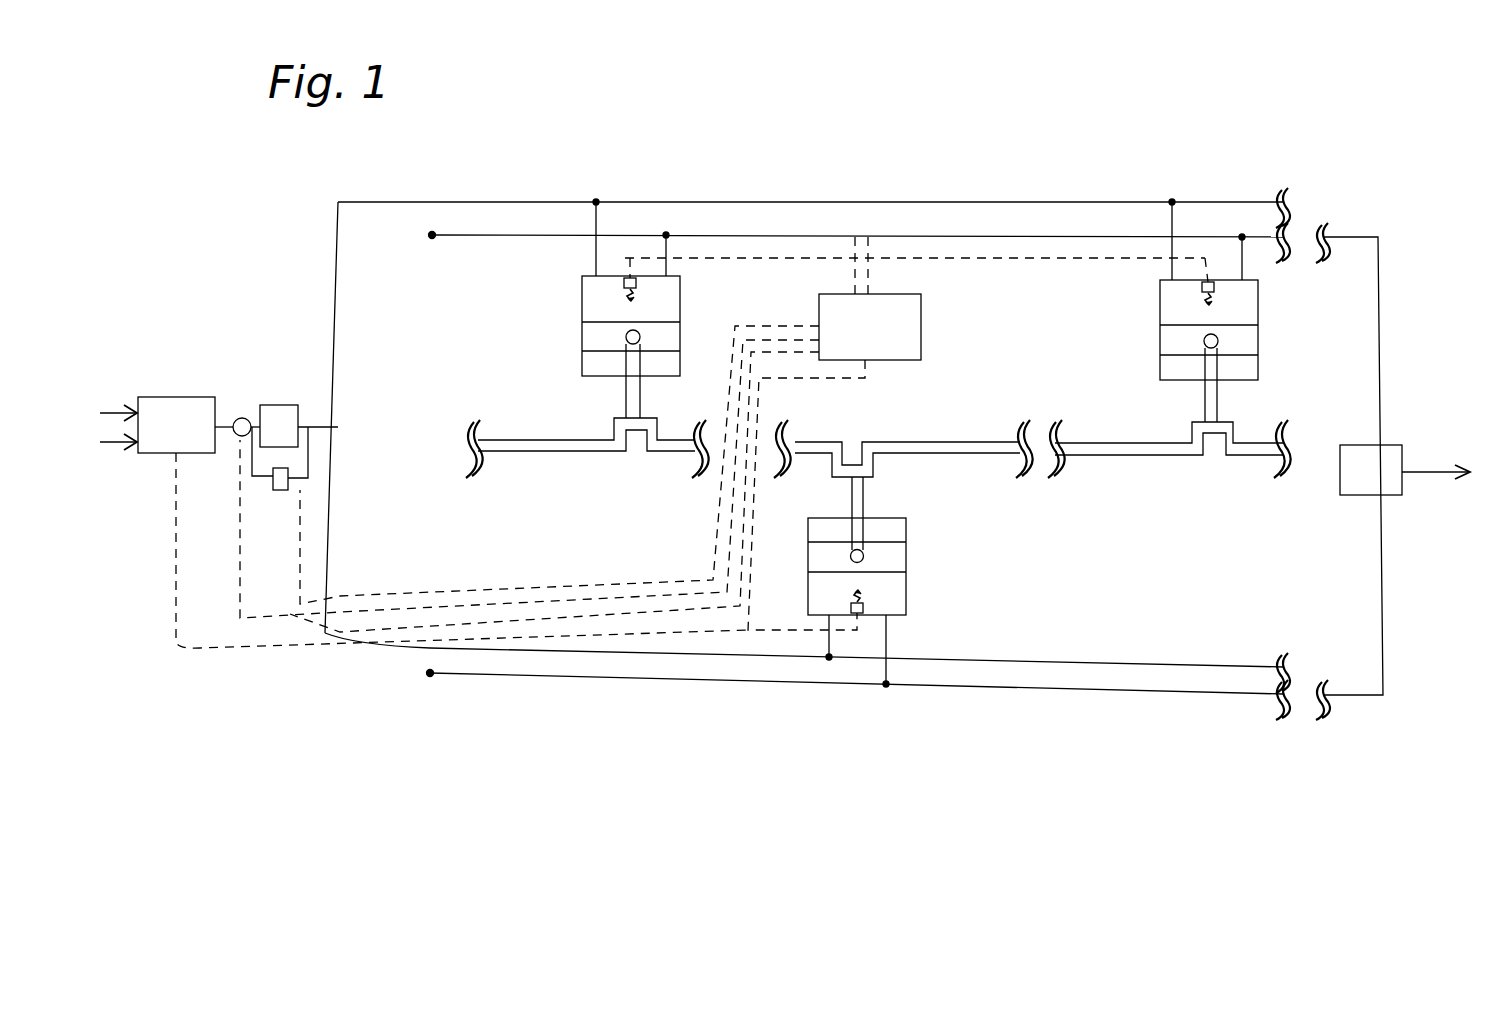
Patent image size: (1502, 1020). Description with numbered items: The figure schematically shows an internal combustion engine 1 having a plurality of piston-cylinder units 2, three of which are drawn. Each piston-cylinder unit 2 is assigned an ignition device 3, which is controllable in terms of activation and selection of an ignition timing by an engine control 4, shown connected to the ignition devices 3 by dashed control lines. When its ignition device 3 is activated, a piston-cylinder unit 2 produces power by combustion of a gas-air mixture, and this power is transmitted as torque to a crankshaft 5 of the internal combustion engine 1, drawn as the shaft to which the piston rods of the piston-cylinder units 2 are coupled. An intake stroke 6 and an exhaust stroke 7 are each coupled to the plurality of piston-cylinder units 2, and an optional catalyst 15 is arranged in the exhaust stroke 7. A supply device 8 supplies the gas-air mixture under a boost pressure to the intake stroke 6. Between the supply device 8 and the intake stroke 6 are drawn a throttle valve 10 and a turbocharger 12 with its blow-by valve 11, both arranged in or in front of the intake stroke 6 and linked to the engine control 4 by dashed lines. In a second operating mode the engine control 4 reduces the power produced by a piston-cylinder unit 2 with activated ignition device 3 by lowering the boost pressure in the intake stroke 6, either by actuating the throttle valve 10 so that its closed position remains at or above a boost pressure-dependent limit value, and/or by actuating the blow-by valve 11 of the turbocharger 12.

The internal combustion engine 1 is at (456, 790).
The piston-cylinder unit 2 is at (682, 330).
The ignition device 3 is at (624, 283).
The engine control 4 is at (692, 442).
The crankshaft 5 is at (536, 442).
The intake stroke 6 is at (884, 198).
The exhaust stroke 7 is at (1012, 240).
The supply device 8 is at (157, 425).
The throttle valve 10 is at (237, 440).
The blow-by valve 11 is at (282, 492).
The turbocharger 12 is at (299, 426).
The catalyst 15 is at (1405, 470).